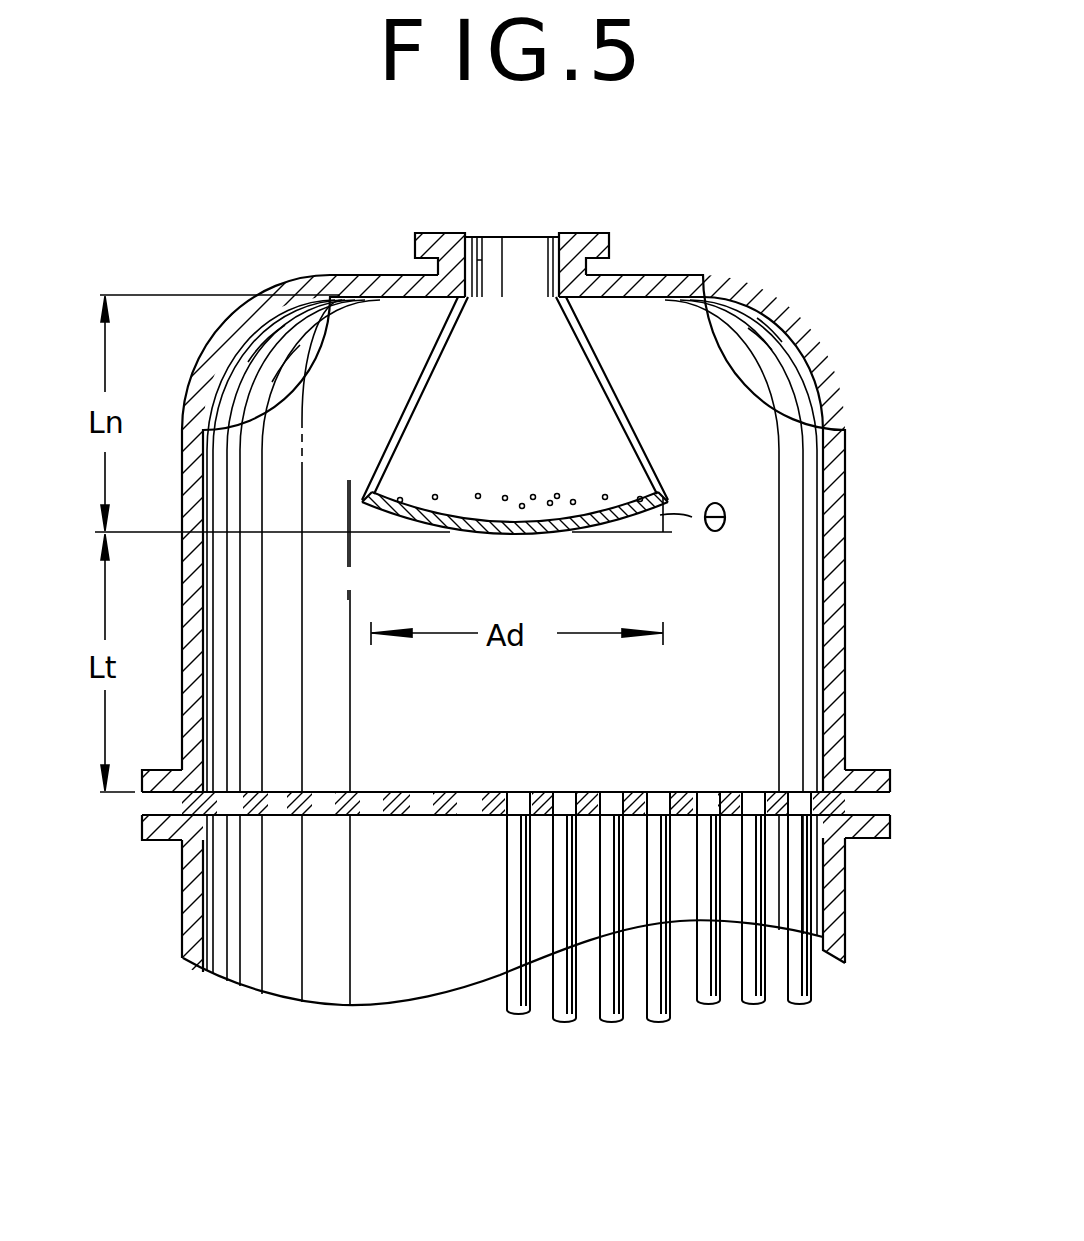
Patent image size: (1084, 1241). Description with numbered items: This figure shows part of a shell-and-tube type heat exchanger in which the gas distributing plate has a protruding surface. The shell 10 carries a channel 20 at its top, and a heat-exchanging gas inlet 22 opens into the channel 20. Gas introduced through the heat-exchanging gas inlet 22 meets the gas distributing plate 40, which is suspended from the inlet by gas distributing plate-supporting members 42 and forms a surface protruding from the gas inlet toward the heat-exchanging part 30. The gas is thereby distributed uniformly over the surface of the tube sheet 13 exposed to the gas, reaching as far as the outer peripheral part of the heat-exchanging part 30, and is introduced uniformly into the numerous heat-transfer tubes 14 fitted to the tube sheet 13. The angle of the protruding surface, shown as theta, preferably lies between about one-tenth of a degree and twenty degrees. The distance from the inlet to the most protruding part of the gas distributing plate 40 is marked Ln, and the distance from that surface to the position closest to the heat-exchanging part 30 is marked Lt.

The shell 10 is at (197, 930).
The tube sheet 13 is at (393, 817).
The heat-transfer tube 14 is at (708, 1002).
The channel 20 is at (812, 346).
The heat-exchanging gas inlet 22 is at (515, 255).
The heat-exchanging part 30 is at (822, 940).
The gas distributing plate 40 is at (533, 537).
The gas distributing plate-supporting member 42 is at (410, 404).